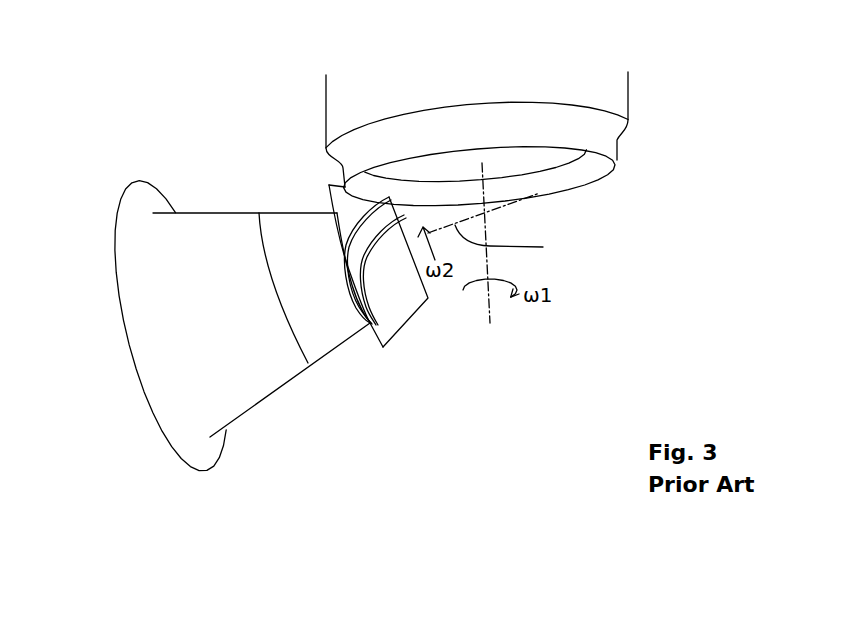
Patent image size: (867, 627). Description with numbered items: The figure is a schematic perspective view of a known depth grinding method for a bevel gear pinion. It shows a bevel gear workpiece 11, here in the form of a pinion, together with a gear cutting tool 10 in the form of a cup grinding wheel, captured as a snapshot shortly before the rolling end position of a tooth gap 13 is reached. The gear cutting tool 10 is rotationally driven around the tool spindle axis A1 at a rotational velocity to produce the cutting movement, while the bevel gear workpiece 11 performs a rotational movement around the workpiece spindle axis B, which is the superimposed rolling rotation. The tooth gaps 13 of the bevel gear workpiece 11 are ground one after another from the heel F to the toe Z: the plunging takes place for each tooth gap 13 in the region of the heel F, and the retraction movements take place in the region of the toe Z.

The gear cutting tool 10 is at (628, 93).
The bevel gear workpiece 11 is at (397, 310).
The tooth gap 13 is at (345, 232).
The tool spindle axis A1 is at (491, 258).
The workpiece spindle axis B is at (496, 225).
The toe Z is at (415, 272).
The heel F is at (384, 293).